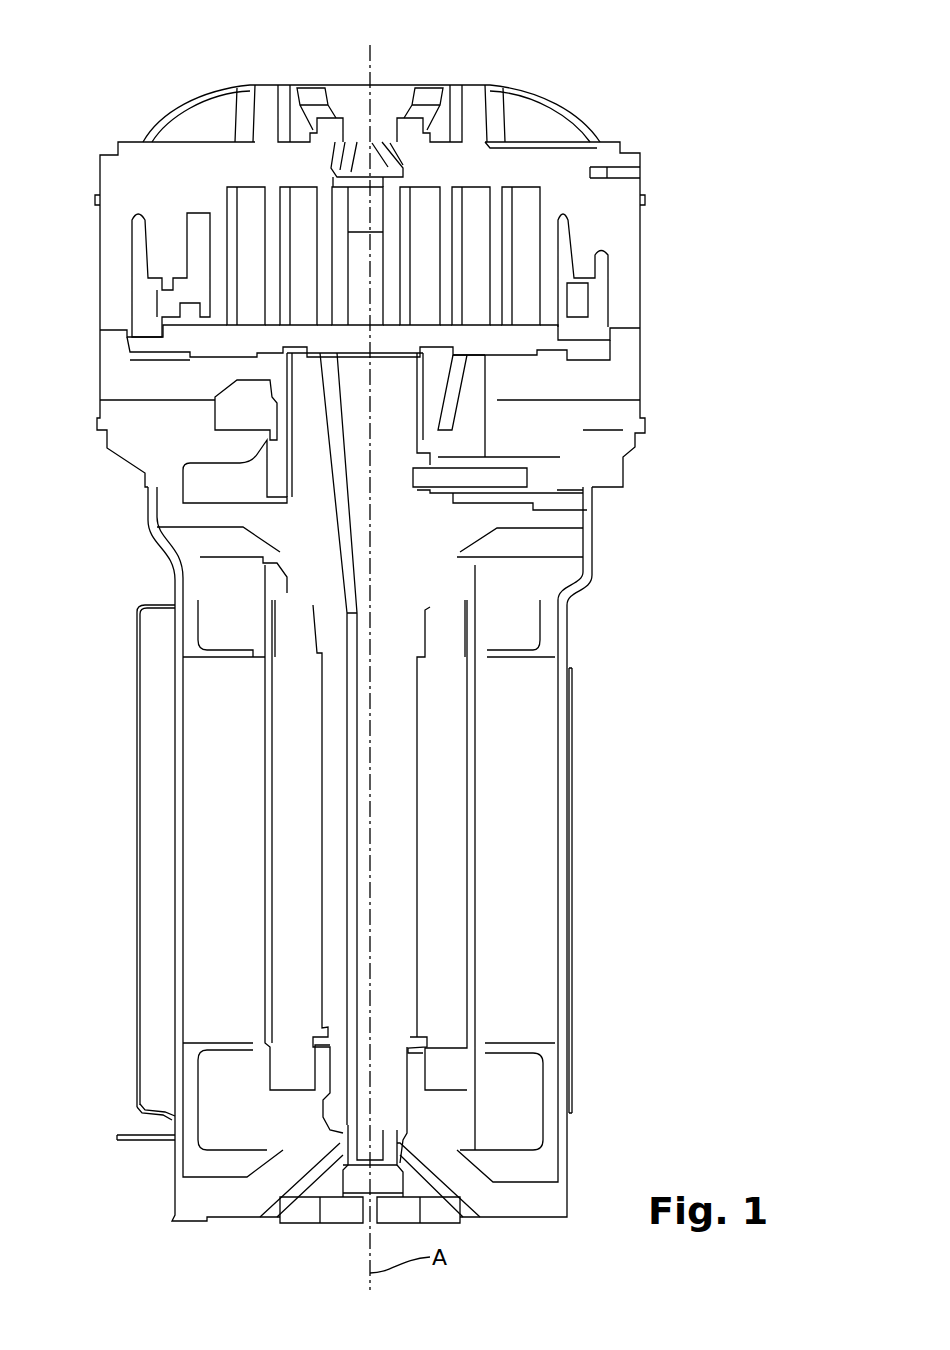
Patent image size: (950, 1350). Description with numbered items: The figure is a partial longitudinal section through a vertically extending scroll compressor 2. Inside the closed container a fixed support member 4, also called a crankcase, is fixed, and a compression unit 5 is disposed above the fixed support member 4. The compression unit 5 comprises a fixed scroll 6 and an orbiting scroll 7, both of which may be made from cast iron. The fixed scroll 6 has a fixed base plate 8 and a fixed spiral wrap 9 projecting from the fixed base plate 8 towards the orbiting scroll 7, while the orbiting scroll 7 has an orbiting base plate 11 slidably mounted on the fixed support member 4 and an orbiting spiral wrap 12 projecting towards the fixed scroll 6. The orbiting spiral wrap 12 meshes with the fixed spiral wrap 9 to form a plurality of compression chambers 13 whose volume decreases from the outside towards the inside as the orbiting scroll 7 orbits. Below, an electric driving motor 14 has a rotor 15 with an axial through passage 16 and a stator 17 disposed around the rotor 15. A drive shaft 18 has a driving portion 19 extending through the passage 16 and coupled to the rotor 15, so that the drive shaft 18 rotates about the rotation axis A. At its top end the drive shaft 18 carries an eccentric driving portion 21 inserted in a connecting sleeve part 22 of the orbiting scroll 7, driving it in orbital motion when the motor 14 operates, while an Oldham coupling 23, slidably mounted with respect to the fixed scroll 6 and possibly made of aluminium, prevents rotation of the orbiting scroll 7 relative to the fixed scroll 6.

The scroll compressor 2 is at (628, 106).
The fixed support member 4 is at (133, 448).
The compression unit 5 is at (574, 254).
The fixed scroll 6 is at (545, 170).
The orbiting scroll 7 is at (515, 345).
The fixed base plate 8 is at (480, 165).
The fixed spiral wrap 9 is at (447, 224).
The orbiting base plate 11 is at (200, 340).
The orbiting spiral wrap 12 is at (230, 197).
The compression chambers 13 is at (480, 250).
The electric driving motor 14 is at (532, 865).
The rotor 15 is at (440, 908).
The axial through passage 16 is at (324, 853).
The stator 17 is at (517, 982).
The drive shaft 18 is at (402, 735).
The driving portion 19 is at (337, 758).
The eccentric driving portion 21 is at (403, 415).
The connecting sleeve part 22 is at (430, 382).
The Oldham coupling 23 is at (578, 302).